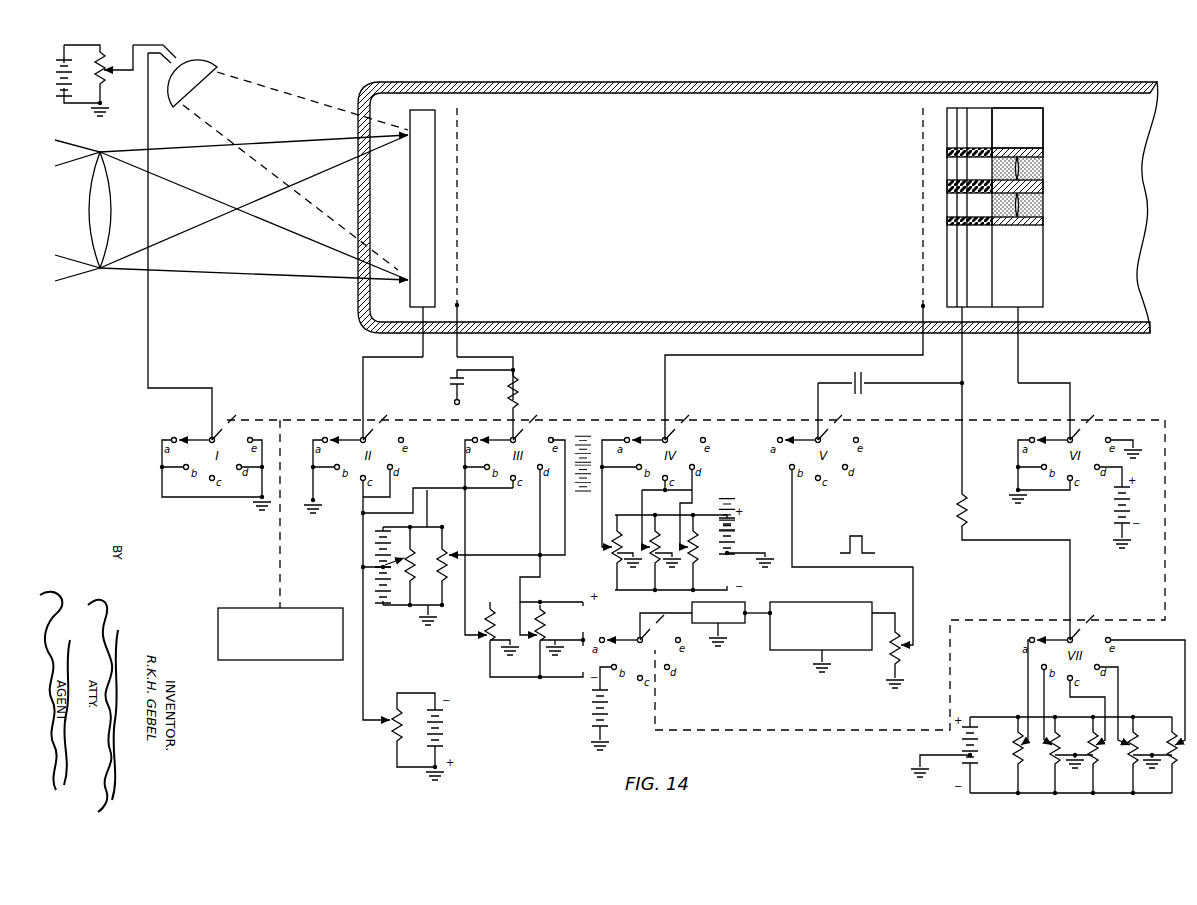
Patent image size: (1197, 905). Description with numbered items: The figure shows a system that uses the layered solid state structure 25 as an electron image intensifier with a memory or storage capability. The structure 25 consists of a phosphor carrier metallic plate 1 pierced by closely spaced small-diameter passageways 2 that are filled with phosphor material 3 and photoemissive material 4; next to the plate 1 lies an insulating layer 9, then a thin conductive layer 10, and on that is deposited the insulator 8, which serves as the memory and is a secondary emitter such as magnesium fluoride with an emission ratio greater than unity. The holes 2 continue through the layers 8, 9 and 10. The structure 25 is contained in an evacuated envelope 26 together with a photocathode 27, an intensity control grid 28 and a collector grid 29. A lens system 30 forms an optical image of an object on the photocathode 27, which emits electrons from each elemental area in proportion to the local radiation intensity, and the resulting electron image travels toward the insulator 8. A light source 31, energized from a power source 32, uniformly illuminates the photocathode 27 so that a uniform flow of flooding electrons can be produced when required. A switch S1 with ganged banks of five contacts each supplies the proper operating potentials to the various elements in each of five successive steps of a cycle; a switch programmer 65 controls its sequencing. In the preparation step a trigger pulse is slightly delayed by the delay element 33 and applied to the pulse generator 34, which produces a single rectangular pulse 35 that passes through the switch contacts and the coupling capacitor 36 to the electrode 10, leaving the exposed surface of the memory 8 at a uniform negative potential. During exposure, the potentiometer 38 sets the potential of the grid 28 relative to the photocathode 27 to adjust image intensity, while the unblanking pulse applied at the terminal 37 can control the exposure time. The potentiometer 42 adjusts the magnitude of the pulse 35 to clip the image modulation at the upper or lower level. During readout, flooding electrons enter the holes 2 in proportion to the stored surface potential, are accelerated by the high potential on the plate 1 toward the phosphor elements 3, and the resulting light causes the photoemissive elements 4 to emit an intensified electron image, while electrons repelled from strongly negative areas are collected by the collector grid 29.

The phosphor carrier metallic plate 1 is at (1036, 122).
The passageways 2 is at (1040, 203).
The phosphor material 3 is at (1040, 152).
The photoemissive material 4 is at (1040, 172).
The insulator layer 8 is at (952, 108).
The insulating layer 9 is at (980, 108).
The conductive layer 10 is at (962, 108).
The solid state structure 25 is at (1090, 277).
The evacuated envelope 26 is at (812, 82).
The photocathode 27 is at (418, 295).
The intensity control grid 28 is at (457, 288).
The collector grid 29 is at (920, 130).
The lens system 30 is at (100, 270).
The light source 31 is at (192, 57).
The power source 32 is at (42, 82).
The delay element 33 is at (740, 630).
The pulse generator 34 is at (788, 650).
The rectangular pulse 35 is at (865, 538).
The coupling capacitor 36 is at (862, 390).
The terminal 37 is at (455, 406).
The potentiometer 38 is at (404, 600).
The potentiometer 42 is at (900, 653).
The switch programmer 65 is at (318, 608).
The switch S1 is at (308, 420).